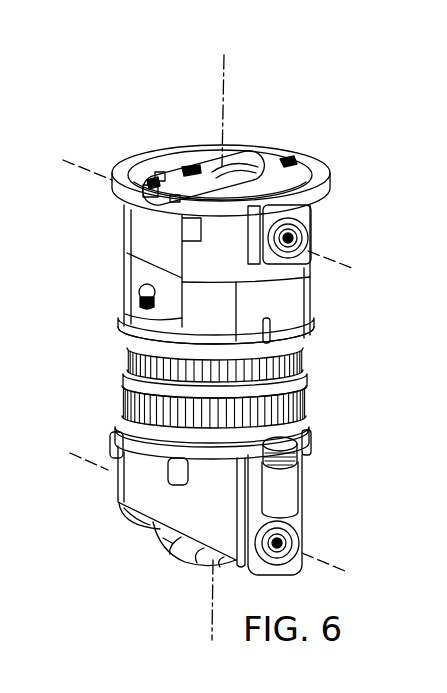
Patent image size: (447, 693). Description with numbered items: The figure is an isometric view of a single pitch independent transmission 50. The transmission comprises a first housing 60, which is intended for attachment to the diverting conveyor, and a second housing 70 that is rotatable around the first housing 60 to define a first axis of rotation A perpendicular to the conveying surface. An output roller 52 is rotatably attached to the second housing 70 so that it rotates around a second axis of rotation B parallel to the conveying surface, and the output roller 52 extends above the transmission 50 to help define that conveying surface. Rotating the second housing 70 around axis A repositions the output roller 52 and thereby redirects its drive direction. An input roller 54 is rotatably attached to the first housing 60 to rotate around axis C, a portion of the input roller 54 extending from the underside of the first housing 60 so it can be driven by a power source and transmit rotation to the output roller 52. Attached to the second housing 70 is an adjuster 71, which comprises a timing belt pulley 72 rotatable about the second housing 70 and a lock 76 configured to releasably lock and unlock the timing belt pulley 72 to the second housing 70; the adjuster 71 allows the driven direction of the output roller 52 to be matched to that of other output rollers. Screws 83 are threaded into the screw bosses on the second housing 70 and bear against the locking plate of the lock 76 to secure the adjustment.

The pitch independent transmission 50 is at (193, 86).
The output roller 52 is at (228, 160).
The input roller 54 is at (171, 536).
The first housing 60 is at (285, 489).
The second housing 70 is at (218, 274).
The adjuster 71 is at (312, 374).
The timing belt pulley 72 is at (127, 400).
The lock 76 is at (106, 347).
The screws 83 is at (146, 286).
The first axis of rotation A is at (225, 108).
The second axis of rotation B is at (334, 260).
The axis C is at (330, 560).